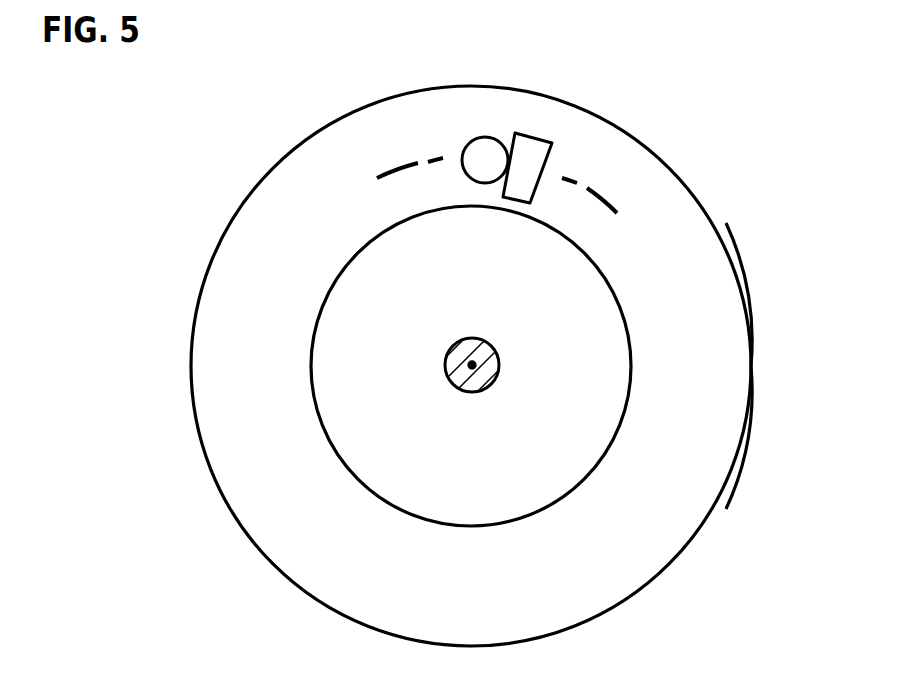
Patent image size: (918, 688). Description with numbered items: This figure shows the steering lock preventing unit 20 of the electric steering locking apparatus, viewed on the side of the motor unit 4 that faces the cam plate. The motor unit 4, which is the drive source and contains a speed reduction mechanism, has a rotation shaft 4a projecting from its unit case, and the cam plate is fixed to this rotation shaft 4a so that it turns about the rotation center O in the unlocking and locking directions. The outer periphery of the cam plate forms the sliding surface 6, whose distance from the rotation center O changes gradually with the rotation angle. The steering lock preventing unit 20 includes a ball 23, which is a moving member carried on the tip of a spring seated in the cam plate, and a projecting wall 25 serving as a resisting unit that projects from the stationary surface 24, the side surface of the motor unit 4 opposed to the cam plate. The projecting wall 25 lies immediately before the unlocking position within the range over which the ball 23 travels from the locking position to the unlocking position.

The motor unit 4 is at (255, 184).
The rotation shaft 4a is at (487, 370).
The rotation center O is at (455, 392).
The sliding surface 6 is at (387, 173).
The steering lock preventing unit 20 is at (654, 136).
The ball 23 is at (485, 137).
The stationary surface 24 is at (735, 373).
The projecting wall 25 is at (530, 150).